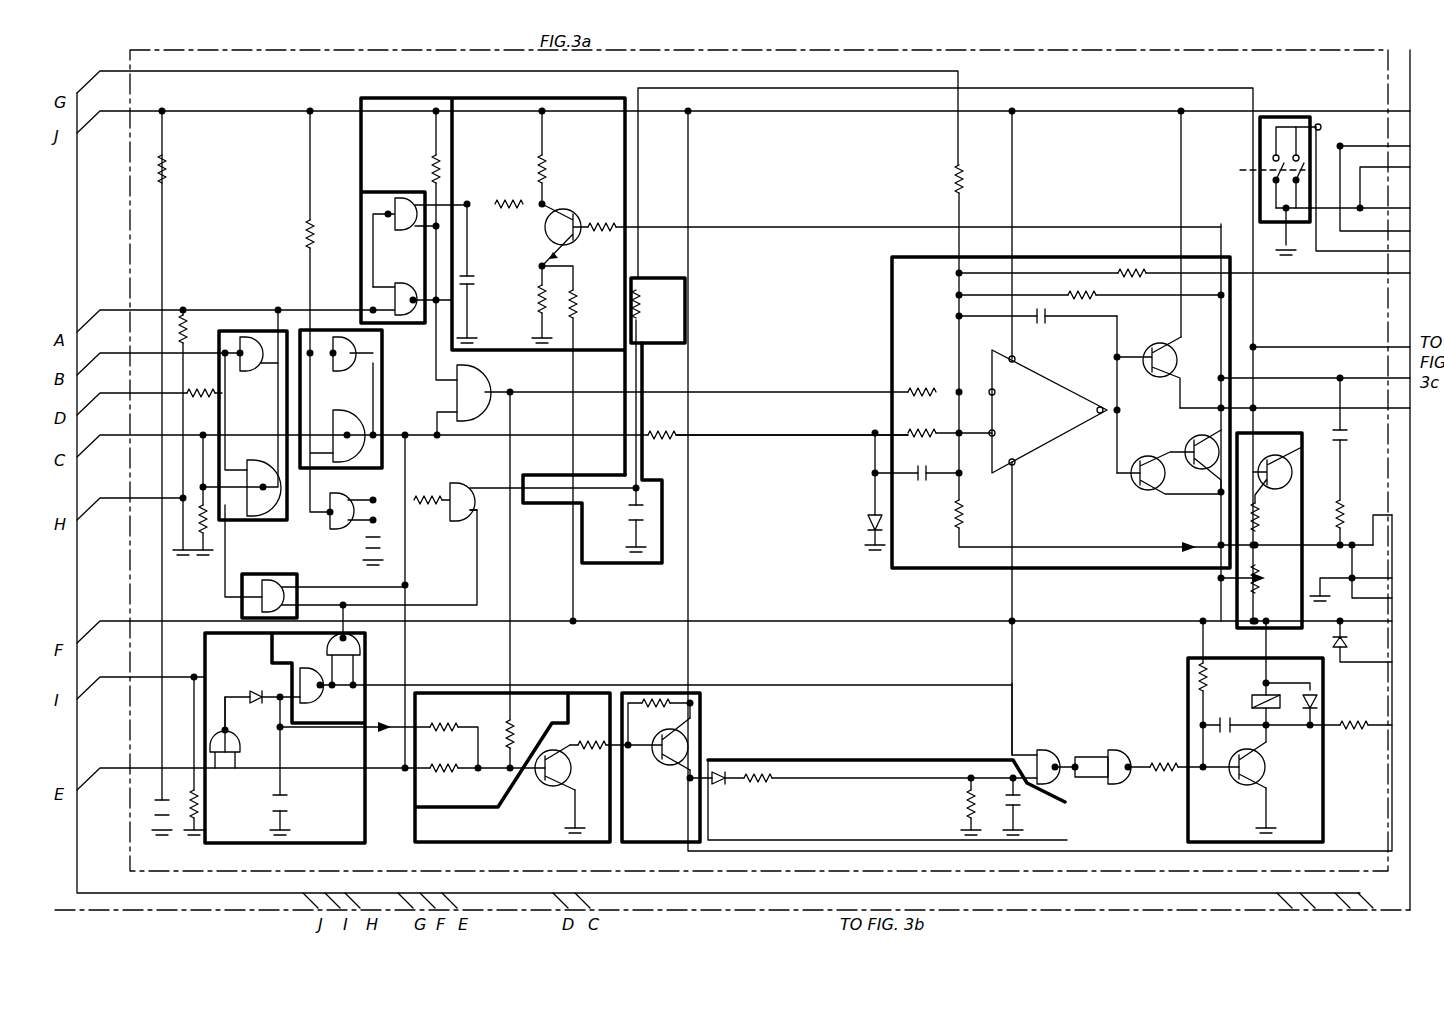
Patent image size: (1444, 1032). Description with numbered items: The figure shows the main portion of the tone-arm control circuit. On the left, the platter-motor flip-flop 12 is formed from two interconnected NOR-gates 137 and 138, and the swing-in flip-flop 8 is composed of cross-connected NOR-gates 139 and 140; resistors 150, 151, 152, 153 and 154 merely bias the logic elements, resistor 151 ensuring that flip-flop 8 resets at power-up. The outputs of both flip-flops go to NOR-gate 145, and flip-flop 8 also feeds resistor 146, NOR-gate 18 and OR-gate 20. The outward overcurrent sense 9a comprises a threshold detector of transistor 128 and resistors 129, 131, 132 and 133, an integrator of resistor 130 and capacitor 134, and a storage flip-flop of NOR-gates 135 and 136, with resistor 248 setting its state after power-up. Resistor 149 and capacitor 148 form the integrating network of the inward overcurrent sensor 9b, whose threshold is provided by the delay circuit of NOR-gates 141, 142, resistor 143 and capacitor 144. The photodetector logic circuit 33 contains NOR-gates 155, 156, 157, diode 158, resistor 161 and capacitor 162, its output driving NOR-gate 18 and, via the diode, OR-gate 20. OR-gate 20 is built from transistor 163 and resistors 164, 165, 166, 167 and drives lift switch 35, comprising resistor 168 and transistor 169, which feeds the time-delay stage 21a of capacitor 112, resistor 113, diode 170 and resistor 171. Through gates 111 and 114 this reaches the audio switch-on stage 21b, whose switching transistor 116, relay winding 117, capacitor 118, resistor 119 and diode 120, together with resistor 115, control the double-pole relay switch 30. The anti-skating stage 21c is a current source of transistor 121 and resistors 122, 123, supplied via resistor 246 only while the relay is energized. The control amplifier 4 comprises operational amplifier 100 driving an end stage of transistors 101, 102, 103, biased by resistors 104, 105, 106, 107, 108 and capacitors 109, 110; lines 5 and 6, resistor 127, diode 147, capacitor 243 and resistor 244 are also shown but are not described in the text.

The control amplifier 4 is at (1082, 258).
The signal line 5 is at (672, 375).
The signal line 6 is at (730, 440).
The swing-in flip-flop 8 is at (383, 365).
The outward overcurrent sense 9a is at (628, 162).
The inward overcurrent sensor 9b is at (583, 555).
The flip-flop 12 is at (258, 332).
The NOR-gate 18 is at (272, 572).
The OR-gate 20 is at (590, 690).
The time-delay stage 21a is at (885, 760).
The audio switch-on stage 21b is at (1325, 808).
The anti-skating stage 21c is at (1295, 418).
The audio switch 30 is at (1288, 112).
The photodetector logic circuit 33 is at (380, 640).
The lift switch 35 is at (702, 720).
The operational amplifier 100 is at (1088, 362).
The transistor 101 is at (1188, 342).
The transistor 102 is at (1188, 428).
The transistor 103 is at (1142, 490).
The resistor 104 is at (1128, 278).
The resistor 105 is at (1090, 300).
The resistor 106 is at (930, 388).
The resistor 107 is at (925, 428).
The resistor 108 is at (965, 515).
The capacitor 109 is at (1045, 318).
The capacitor 110 is at (926, 478).
The gate 111 is at (1048, 748).
The capacitor 112 is at (1020, 797).
The resistor 113 is at (965, 812).
The gate 114 is at (1110, 790).
The resistor 115 is at (1160, 772).
The switching transistor 116 is at (1240, 785).
The relay winding 117 is at (1250, 690).
The capacitor 118 is at (1222, 733).
The resistor 119 is at (1197, 685).
The diode 120 is at (1317, 700).
The transistor 121 is at (1292, 455).
The resistor 122 is at (1275, 518).
The resistor 123 is at (1275, 572).
The resistor 127 is at (952, 185).
The transistor 128 is at (586, 192).
The resistor 129 is at (548, 165).
The resistor 130 is at (515, 195).
The resistor 131 is at (602, 232).
The resistor 132 is at (536, 298).
The resistor 133 is at (586, 300).
The capacitor 134 is at (474, 276).
The NOR-gate 135 is at (395, 232).
The NOR-gate 136 is at (412, 288).
The NOR-gate 137 is at (250, 372).
The NOR-gate 138 is at (268, 450).
The NOR-gate 139 is at (340, 372).
The NOR-gate 140 is at (362, 443).
The NOR-gate 141 is at (462, 522).
The NOR-gate 142 is at (343, 532).
The resistor 143 is at (425, 505).
The capacitor 144 is at (360, 545).
The NOR-gate 145 is at (480, 375).
The resistor 146 is at (668, 440).
The zener diode 147 is at (870, 525).
The capacitor 148 is at (625, 505).
The resistor 149 is at (658, 310).
The resistor 150 is at (168, 170).
The resistor 151 is at (300, 235).
The resistor 152 is at (195, 320).
The resistor 153 is at (212, 388).
The resistor 154 is at (210, 530).
The NOR-gate 155 is at (320, 645).
The NOR-gate 156 is at (325, 700).
The NOR-gate 157 is at (240, 740).
The diode 158 is at (258, 690).
The resistor 161 is at (200, 805).
The capacitor 162 is at (155, 812).
The transistor 163 is at (548, 785).
The resistor 164 is at (516, 732).
The resistor 165 is at (450, 722).
The resistor 166 is at (450, 773).
The resistor 167 is at (595, 750).
The resistor 168 is at (670, 672).
The transistor 169 is at (660, 762).
The diode 170 is at (715, 785).
The resistor 171 is at (762, 783).
The capacitor 243 is at (1347, 440).
The resistor 244 is at (1358, 495).
The resistor 246 is at (1356, 730).
The resistor 248 is at (432, 170).